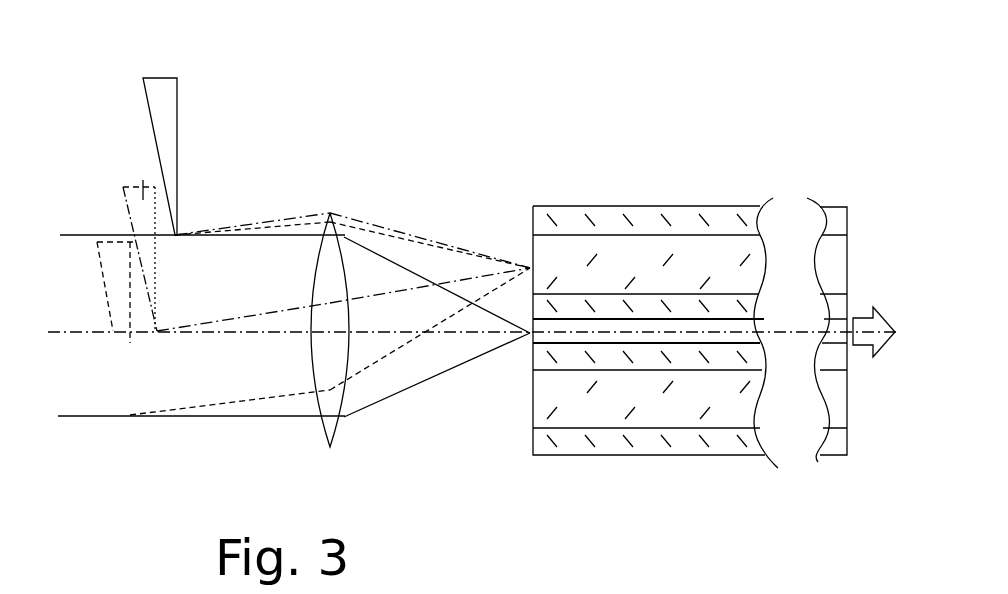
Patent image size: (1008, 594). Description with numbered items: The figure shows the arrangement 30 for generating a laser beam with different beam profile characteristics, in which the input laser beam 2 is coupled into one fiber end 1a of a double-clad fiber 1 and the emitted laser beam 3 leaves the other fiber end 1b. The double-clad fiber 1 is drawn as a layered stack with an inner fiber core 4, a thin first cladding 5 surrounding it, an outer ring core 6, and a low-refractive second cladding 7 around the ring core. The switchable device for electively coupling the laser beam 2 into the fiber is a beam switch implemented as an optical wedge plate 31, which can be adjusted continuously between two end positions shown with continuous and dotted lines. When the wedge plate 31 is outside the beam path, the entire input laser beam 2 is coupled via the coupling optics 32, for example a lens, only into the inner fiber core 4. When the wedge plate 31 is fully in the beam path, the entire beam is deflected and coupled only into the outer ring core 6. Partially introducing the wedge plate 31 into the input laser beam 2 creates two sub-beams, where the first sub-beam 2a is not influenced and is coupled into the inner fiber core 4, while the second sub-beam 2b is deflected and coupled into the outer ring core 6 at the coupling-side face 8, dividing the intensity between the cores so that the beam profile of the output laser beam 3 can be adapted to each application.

The double-clad fiber 1 is at (688, 198).
The fiber end 1a is at (592, 206).
The other fiber end 1b is at (834, 207).
The input laser beam 2 is at (72, 235).
The first sub-beam 2a is at (177, 418).
The second sub-beam 2b is at (247, 235).
The emitted laser beam 3 is at (865, 346).
The inner fiber core 4 is at (567, 336).
The first cladding 5 is at (617, 358).
The outer ring core 6 is at (670, 403).
The second cladding 7 is at (717, 450).
The coupling-side face 8 is at (532, 250).
The arrangement 30 is at (462, 200).
The optical wedge plate 31 is at (163, 93).
The coupling optics 32 is at (328, 427).